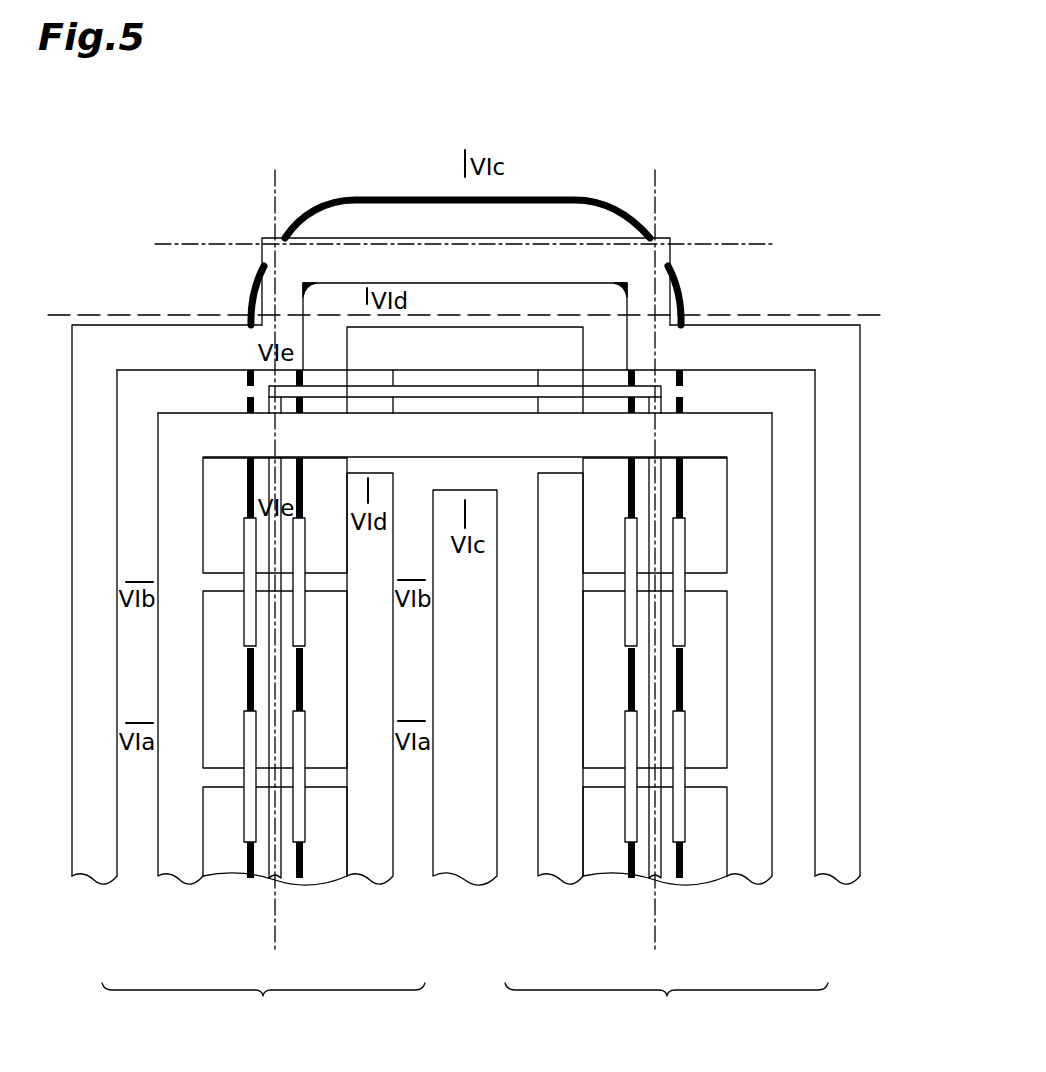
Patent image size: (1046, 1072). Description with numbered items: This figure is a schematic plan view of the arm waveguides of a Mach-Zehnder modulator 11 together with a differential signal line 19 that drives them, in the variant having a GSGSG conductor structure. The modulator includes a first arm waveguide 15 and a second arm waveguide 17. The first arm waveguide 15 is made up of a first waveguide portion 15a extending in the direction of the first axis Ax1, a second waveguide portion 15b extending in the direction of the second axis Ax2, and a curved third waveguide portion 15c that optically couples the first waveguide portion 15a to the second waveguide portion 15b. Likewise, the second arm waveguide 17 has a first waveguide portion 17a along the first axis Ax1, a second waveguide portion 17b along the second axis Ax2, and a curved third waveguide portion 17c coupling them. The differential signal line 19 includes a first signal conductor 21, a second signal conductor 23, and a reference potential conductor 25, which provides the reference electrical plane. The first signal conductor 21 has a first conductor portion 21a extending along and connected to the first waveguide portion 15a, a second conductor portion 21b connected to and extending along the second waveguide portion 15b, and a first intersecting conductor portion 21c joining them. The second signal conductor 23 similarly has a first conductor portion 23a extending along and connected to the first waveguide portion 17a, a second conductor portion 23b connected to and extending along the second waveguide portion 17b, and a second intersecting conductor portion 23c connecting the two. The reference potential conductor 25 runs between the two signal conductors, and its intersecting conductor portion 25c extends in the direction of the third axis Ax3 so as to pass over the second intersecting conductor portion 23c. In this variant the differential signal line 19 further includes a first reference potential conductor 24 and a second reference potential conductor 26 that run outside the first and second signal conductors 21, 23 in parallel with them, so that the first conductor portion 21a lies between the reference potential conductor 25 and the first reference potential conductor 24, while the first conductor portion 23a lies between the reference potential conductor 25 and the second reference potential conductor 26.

The Mach-Zehnder modulator 11 is at (682, 162).
The first arm waveguide 15 is at (247, 860).
The first waveguide portion 15a is at (247, 500).
The second waveguide portion 15b is at (683, 500).
The third waveguide portion 15c is at (295, 226).
The second arm waveguide 17 is at (305, 860).
The first waveguide portion 17a is at (305, 500).
The second waveguide portion 17b is at (632, 500).
The third waveguide portion 17c is at (312, 293).
The differential signal line 19 is at (465, 1003).
The first signal conductor 21 is at (466, 697).
The first conductor portion 21a is at (165, 498).
The second conductor portion 21b is at (762, 503).
The first intersecting conductor portion 21c is at (223, 432).
The second signal conductor 23 is at (340, 865).
The first conductor portion 23a is at (373, 553).
The second conductor portion 23b is at (553, 603).
The second intersecting conductor portion 23c is at (365, 356).
The first reference potential conductor 24 is at (430, 860).
The reference potential conductor 25 is at (268, 878).
The intersecting conductor portion 25c is at (278, 467).
The second reference potential conductor 26 is at (110, 862).
The first axis Ax1 is at (277, 936).
The second axis Ax2 is at (653, 936).
The third axis Ax3 is at (745, 246).